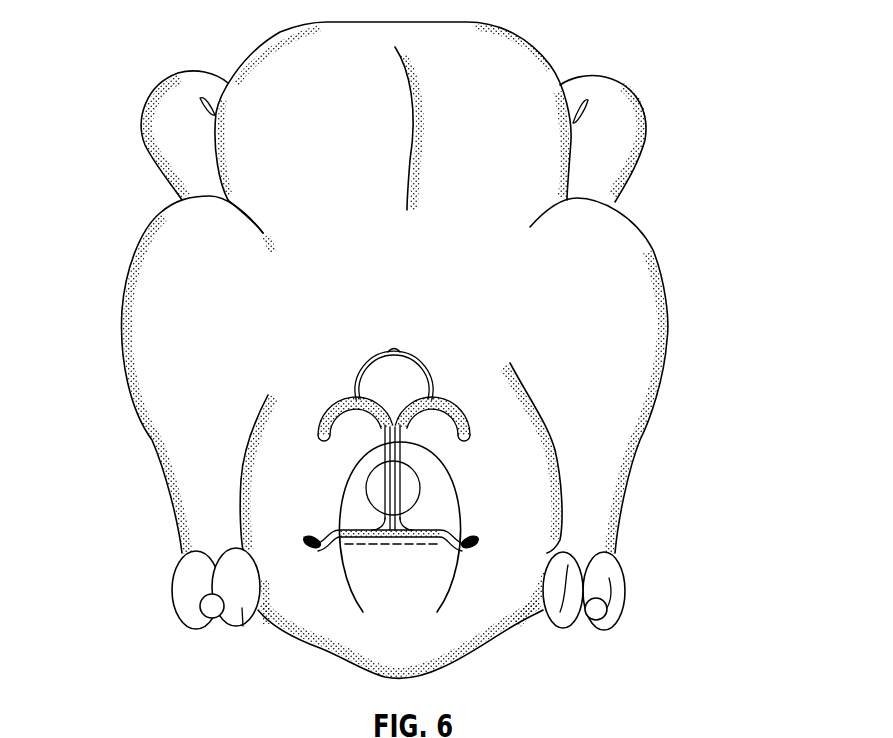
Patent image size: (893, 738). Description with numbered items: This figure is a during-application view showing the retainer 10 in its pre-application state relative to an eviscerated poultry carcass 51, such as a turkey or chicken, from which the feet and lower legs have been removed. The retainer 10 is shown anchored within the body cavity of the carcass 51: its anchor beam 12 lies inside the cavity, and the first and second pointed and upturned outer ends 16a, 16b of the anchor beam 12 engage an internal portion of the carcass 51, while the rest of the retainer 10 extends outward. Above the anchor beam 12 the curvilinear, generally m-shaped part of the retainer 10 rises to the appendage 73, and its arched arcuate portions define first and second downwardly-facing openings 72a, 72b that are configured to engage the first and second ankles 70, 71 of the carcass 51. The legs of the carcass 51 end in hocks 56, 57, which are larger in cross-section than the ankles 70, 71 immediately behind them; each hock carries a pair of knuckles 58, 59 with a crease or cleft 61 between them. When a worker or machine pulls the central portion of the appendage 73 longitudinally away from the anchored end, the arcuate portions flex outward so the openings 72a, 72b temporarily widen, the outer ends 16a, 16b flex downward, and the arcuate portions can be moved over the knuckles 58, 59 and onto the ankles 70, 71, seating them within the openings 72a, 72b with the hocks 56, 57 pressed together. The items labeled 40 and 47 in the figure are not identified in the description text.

The carcass 51 is at (121, 55).
The retainer 10 is at (365, 355).
The appendage 73 is at (418, 358).
The first downwardly-facing opening 72a is at (438, 422).
The second downwardly-facing opening 72b is at (349, 422).
The body cavity opening 47 is at (433, 508).
The aperture 40 is at (430, 493).
The first pointed and upturned outer end 16a is at (310, 530).
The second pointed and upturned outer end 16b is at (486, 526).
The anchor beam 12 is at (393, 555).
The hock 57 is at (178, 507).
The hock 56 is at (607, 495).
The second ankle 71 is at (185, 548).
The first ankle 70 is at (608, 545).
The knuckle 58 is at (187, 590).
The knuckle 59 is at (240, 612).
The crease or cleft 61 is at (203, 620).